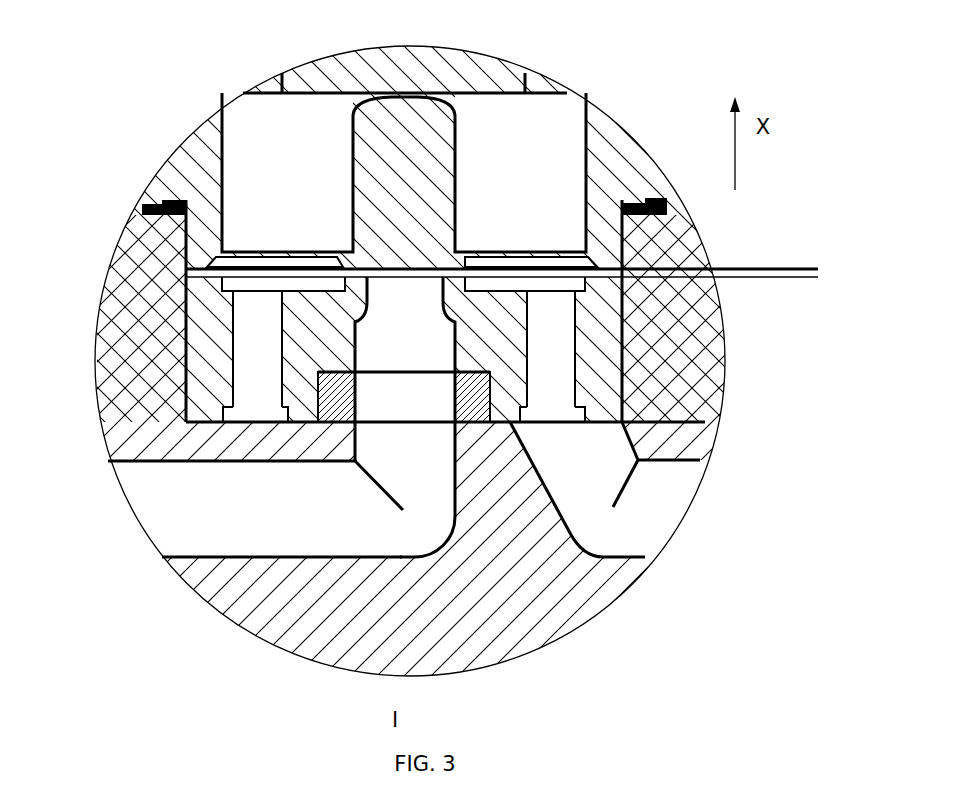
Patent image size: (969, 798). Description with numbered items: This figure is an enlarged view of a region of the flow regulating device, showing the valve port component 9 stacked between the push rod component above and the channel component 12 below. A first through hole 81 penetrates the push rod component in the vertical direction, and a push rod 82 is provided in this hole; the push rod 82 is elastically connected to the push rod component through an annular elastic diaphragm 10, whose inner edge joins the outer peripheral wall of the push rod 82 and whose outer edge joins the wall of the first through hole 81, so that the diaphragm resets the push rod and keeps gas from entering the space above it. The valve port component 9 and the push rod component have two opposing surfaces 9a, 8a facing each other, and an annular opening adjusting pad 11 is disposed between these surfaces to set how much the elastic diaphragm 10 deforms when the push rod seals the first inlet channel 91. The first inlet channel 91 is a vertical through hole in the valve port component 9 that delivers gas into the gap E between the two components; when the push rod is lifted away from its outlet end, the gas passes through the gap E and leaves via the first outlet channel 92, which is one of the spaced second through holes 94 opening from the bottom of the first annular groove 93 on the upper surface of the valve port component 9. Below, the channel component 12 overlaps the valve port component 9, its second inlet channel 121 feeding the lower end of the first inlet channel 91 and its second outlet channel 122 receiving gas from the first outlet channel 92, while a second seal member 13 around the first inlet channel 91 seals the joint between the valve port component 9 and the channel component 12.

The opposing surface of the push rod component 8a is at (502, 253).
The valve port component 9 is at (483, 283).
The opposing surface of the valve port component 9a is at (502, 295).
The elastic diaphragm 10 is at (473, 308).
The opening adjusting pad 11 is at (628, 284).
The channel component 12 is at (483, 575).
The second inlet channel 121 is at (240, 508).
The second outlet channel 122 is at (588, 489).
The second seal member 13 is at (477, 398).
The first through hole 81 is at (277, 143).
The push rod 82 is at (412, 173).
The first inlet channel 91 is at (398, 333).
The first outlet channel 92 is at (600, 275).
The first annular groove 93 is at (257, 287).
The second through holes 94 is at (242, 383).
The gap E is at (338, 266).